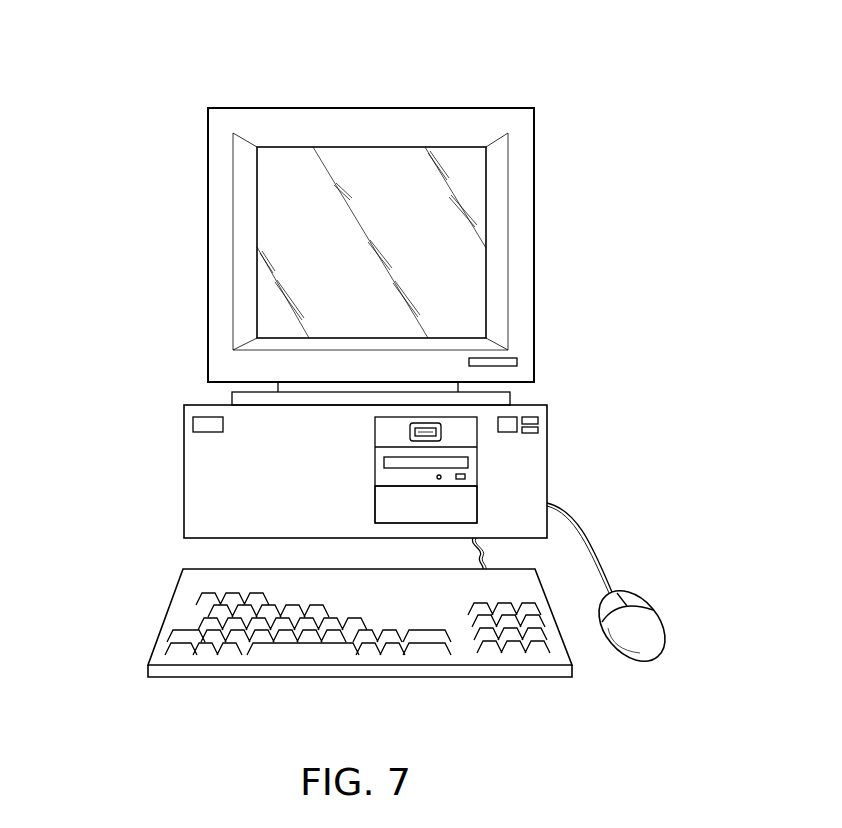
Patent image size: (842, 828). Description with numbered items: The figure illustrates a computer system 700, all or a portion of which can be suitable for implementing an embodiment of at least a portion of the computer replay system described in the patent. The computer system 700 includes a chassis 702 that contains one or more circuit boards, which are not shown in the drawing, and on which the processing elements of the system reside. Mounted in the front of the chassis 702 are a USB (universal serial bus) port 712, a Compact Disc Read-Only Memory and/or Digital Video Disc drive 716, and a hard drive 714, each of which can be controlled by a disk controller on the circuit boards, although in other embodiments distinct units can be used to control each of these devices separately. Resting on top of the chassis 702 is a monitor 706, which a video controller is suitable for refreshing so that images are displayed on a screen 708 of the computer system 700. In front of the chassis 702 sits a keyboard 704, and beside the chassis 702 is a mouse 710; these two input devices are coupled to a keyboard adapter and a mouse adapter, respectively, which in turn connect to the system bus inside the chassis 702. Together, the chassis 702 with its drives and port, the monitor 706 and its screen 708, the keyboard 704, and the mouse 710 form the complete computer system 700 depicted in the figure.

The computer system 700 is at (531, 82).
The chassis 702 is at (183, 473).
The keyboard 704 is at (168, 617).
The monitor 706 is at (273, 107).
The screen 708 is at (298, 247).
The mouse 710 is at (648, 617).
The USB port 712 is at (442, 430).
The hard drive 714 is at (468, 504).
The CD-ROM or DVD drive 716 is at (468, 467).